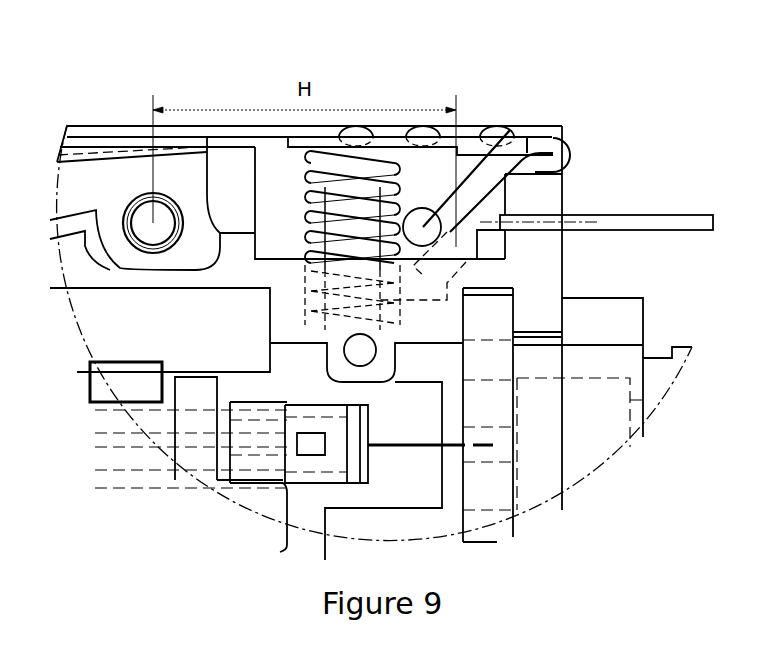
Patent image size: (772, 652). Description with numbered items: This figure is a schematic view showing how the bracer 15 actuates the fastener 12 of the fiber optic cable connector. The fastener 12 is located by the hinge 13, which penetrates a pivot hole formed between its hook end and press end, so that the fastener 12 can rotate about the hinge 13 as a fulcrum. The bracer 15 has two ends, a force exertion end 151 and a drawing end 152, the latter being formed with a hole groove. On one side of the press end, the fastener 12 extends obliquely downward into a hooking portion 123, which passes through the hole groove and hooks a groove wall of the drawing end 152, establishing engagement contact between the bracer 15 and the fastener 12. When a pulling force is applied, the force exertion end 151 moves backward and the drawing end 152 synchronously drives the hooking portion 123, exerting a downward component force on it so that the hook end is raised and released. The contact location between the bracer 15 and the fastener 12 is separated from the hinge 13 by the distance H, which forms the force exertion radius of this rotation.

The fastener 12 is at (88, 145).
The hinge 13 is at (147, 198).
The bracer 15 is at (573, 63).
The force exertion end 151 is at (583, 222).
The drawing end 152 is at (493, 150).
The hooking portion 123 is at (530, 167).